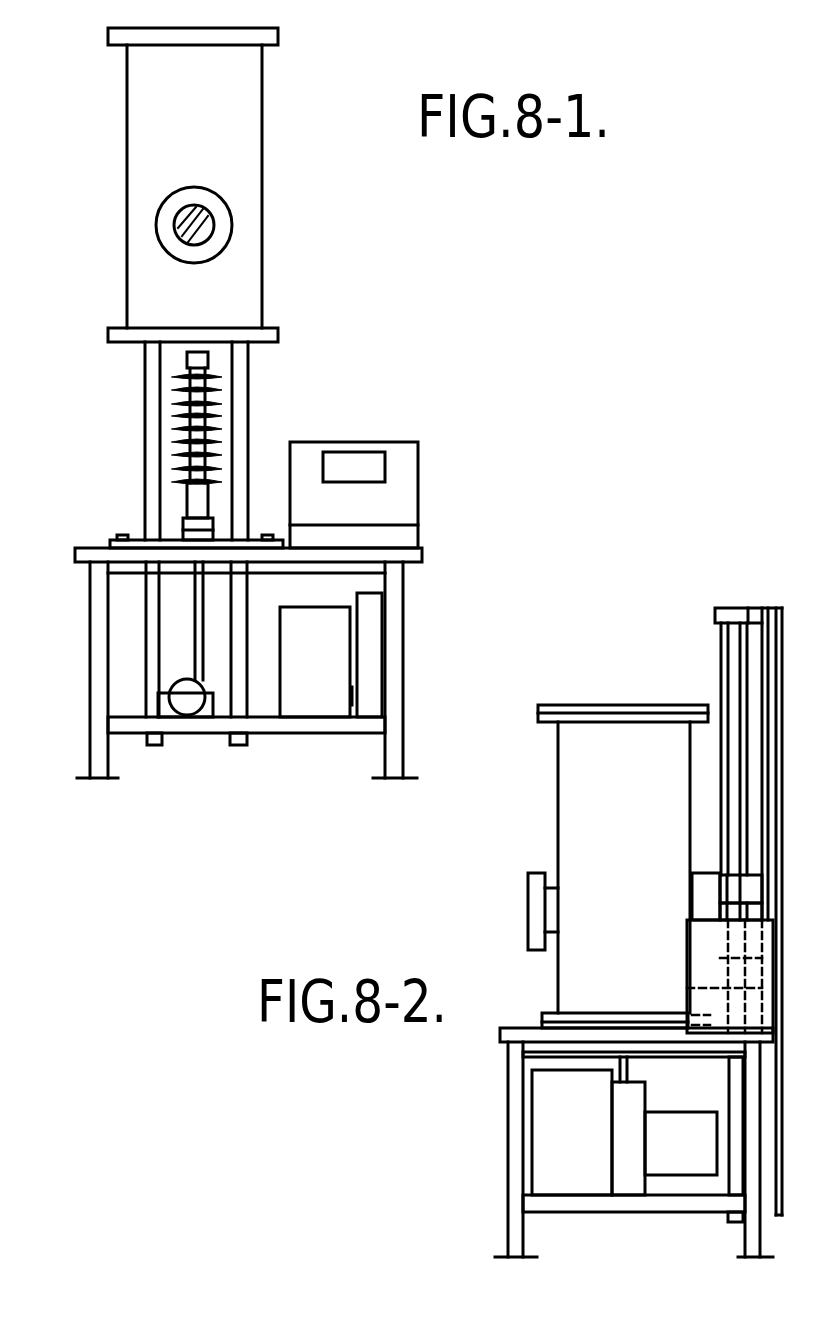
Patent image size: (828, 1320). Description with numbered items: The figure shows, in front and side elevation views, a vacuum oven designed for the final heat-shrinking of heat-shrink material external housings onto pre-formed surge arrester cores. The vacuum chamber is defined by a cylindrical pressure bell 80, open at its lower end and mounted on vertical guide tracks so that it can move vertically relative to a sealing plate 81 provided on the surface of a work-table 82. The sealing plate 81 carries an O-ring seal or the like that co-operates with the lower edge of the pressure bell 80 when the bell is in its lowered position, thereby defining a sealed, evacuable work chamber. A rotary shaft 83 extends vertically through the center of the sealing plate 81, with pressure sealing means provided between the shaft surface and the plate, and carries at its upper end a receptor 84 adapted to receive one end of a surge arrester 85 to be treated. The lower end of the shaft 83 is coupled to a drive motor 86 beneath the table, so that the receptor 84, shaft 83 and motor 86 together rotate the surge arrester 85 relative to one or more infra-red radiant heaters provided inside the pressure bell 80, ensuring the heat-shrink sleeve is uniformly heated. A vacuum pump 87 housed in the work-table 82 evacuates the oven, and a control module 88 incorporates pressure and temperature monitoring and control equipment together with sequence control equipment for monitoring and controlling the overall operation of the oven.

In FIG. 8-1, the pressure bell 80 is at (235, 155).
In FIG. 8-1, the sealing plate 81 is at (113, 545).
In FIG. 8-1, the work-table 82 is at (98, 608).
In FIG. 8-2, the work-table 82 is at (517, 1102).
In FIG. 8-1, the rotary shaft 83 is at (203, 653).
In FIG. 8-2, the rotary shaft 83 is at (628, 1063).
In FIG. 8-1, the receptor 84 is at (188, 520).
In FIG. 8-1, the surge arrester 85 is at (207, 402).
In FIG. 8-1, the drive motor 86 is at (190, 703).
In FIG. 8-1, the vacuum pump 87 is at (315, 688).
In FIG. 8-2, the vacuum pump 87 is at (568, 1173).
In FIG. 8-1, the control module 88 is at (402, 457).